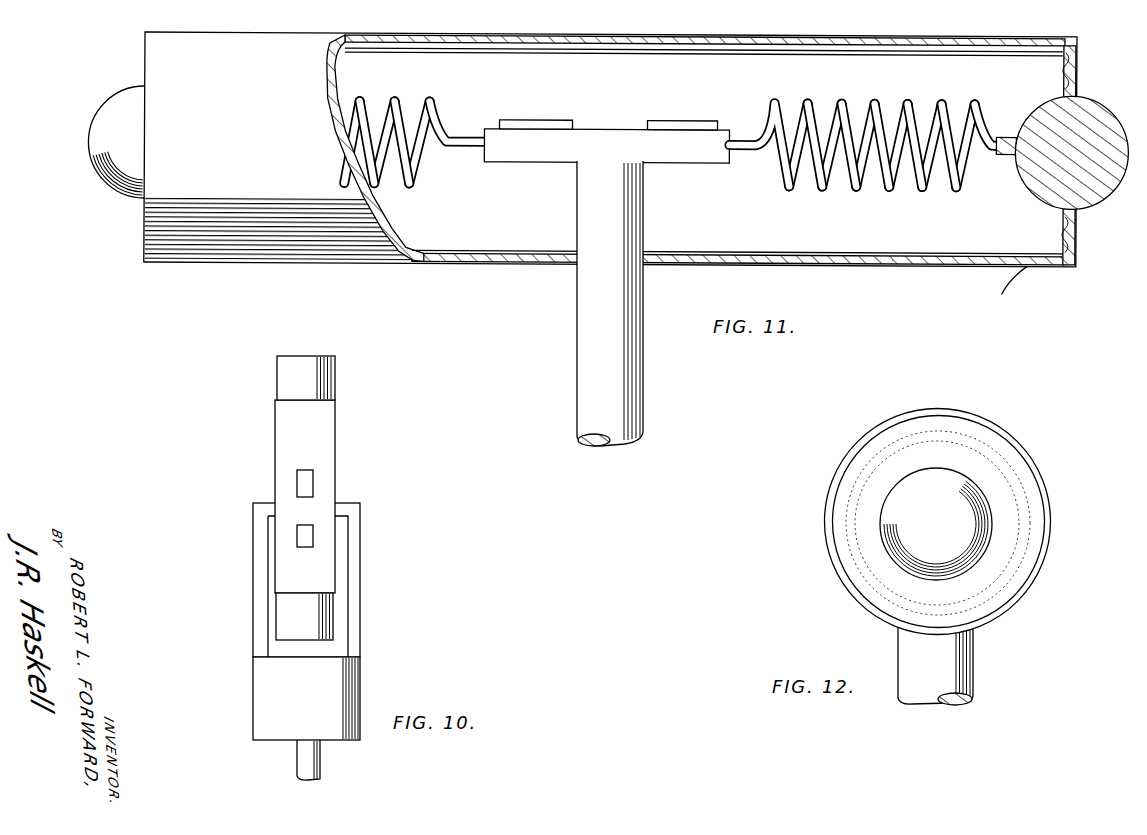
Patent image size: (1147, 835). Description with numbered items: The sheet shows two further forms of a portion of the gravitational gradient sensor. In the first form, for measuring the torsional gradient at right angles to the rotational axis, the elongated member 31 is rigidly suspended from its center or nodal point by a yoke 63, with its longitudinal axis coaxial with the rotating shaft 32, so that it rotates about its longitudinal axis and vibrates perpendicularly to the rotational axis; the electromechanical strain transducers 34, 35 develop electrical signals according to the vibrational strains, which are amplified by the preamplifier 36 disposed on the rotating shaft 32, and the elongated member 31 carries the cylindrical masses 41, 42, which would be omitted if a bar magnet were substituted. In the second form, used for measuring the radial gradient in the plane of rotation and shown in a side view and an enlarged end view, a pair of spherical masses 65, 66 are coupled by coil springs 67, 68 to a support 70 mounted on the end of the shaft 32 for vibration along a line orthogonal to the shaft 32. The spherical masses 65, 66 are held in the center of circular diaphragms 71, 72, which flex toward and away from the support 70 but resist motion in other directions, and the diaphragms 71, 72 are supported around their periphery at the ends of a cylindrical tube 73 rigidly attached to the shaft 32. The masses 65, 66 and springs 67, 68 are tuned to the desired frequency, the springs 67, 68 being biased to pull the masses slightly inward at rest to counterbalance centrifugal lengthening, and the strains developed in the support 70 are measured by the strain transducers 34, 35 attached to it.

In FIG. 10, the elongated member 31 is at (313, 462).
In FIG. 11, the shaft 32 is at (590, 384).
In FIG. 10, the shaft 32 is at (302, 757).
In FIG. 12, the shaft 32 is at (932, 663).
In FIG. 11, the electromechanical strain transducer 34 is at (693, 120).
In FIG. 10, the electromechanical strain transducer 34 is at (313, 487).
In FIG. 11, the electromechanical strain transducer 35 is at (560, 105).
In FIG. 10, the electromechanical strain transducer 35 is at (297, 537).
In FIG. 10, the preamplifier 36 is at (333, 690).
In FIG. 10, the cylindrical mass 41 is at (318, 384).
In FIG. 10, the cylindrical mass 42 is at (288, 625).
In FIG. 10, the yoke 63 is at (361, 578).
In FIG. 11, the spherical mass 65 is at (1084, 116).
In FIG. 11, the spherical mass 66 is at (112, 130).
In FIG. 12, the spherical mass 66 is at (947, 495).
In FIG. 11, the coil spring 67 is at (847, 108).
In FIG. 11, the coil spring 68 is at (395, 106).
In FIG. 11, the support 70 is at (598, 143).
In FIG. 11, the circular diaphragm 71 is at (1077, 230).
In FIG. 11, the circular diaphragm 72 is at (146, 230).
In FIG. 12, the circular diaphragm 72 is at (1003, 462).
In FIG. 11, the cylindrical tube 73 is at (610, 173).
In FIG. 12, the cylindrical tube 73 is at (828, 548).